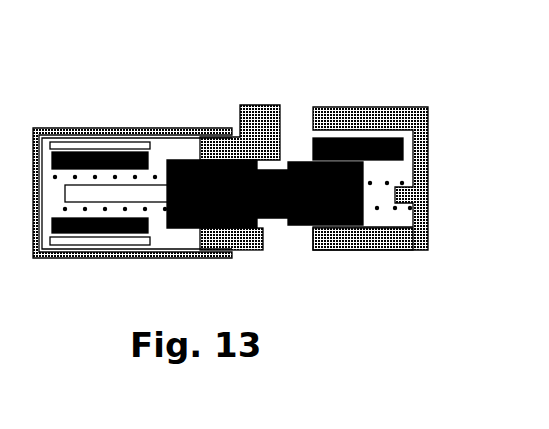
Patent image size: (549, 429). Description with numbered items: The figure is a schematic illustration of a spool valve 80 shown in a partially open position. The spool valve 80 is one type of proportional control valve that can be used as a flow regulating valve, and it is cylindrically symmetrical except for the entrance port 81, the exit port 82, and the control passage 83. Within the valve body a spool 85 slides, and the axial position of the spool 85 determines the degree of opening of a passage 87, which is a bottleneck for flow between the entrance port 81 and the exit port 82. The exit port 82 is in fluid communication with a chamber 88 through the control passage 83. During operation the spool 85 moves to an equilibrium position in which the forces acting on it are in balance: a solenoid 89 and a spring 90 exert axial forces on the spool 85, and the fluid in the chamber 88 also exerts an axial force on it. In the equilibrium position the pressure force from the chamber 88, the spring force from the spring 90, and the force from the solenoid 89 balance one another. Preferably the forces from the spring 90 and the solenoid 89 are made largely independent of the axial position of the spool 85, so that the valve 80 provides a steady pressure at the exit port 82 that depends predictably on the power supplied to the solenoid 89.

The spool valve 80 is at (154, 97).
The entrance port 81 is at (302, 242).
The exit port 82 is at (310, 117).
The control passage 83 is at (382, 132).
The spool 85 is at (192, 226).
The passage 87 is at (284, 160).
The chamber 88 is at (125, 210).
The solenoid 89 is at (96, 158).
The spring 90 is at (377, 208).